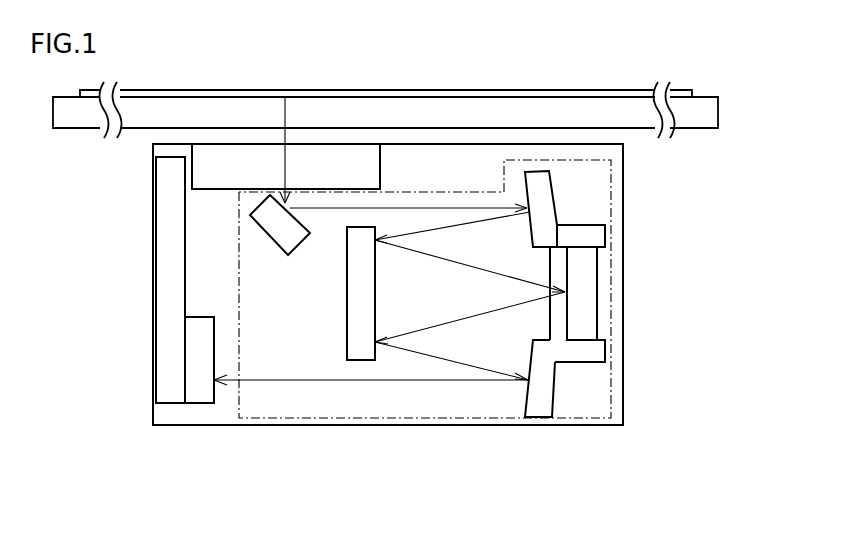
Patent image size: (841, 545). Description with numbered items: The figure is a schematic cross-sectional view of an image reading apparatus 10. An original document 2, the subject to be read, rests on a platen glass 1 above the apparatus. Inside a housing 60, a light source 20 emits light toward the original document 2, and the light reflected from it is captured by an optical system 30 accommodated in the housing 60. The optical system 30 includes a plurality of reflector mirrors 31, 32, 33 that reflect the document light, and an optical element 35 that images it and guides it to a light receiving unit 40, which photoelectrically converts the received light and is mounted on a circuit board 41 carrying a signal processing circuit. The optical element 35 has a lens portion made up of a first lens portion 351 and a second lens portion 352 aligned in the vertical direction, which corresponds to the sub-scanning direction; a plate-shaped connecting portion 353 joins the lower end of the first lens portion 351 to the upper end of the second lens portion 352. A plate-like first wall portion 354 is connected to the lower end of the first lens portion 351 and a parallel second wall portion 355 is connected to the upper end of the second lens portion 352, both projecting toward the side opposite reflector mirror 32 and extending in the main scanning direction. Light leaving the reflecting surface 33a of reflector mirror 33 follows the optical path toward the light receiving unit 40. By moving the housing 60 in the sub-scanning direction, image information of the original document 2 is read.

The platen glass 1 is at (703, 110).
The original document 2 is at (442, 90).
The image reading apparatus 10 is at (345, 313).
The light source 20 is at (215, 160).
The optical system 30 is at (388, 313).
The reflector mirror 31 is at (265, 210).
The reflector mirror 32 is at (357, 237).
The reflector mirror 33 is at (620, 293).
The reflecting surface 33a is at (556, 265).
The optical element 35 is at (605, 232).
The first lens portion 351 is at (541, 196).
The second lens portion 352 is at (541, 388).
The connecting portion 353 is at (543, 325).
The first wall portion 354 is at (590, 236).
The second wall portion 355 is at (590, 350).
The light receiving unit 40 is at (198, 392).
The circuit board 41 is at (165, 290).
The housing 60 is at (405, 426).